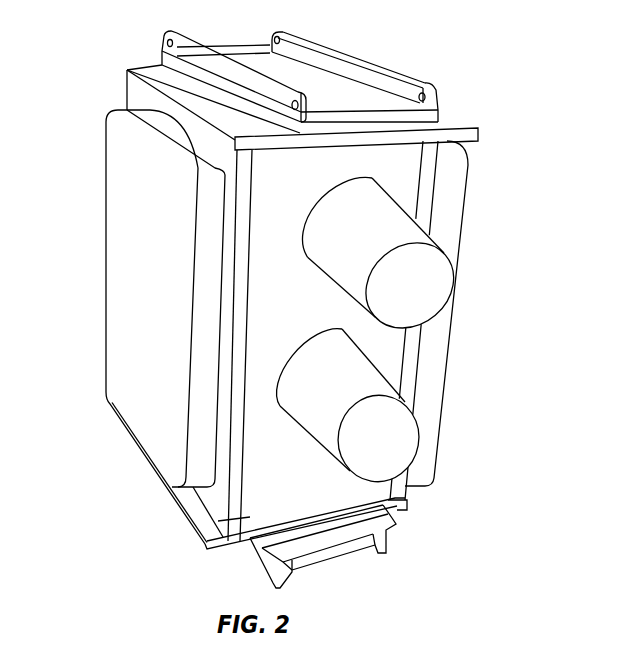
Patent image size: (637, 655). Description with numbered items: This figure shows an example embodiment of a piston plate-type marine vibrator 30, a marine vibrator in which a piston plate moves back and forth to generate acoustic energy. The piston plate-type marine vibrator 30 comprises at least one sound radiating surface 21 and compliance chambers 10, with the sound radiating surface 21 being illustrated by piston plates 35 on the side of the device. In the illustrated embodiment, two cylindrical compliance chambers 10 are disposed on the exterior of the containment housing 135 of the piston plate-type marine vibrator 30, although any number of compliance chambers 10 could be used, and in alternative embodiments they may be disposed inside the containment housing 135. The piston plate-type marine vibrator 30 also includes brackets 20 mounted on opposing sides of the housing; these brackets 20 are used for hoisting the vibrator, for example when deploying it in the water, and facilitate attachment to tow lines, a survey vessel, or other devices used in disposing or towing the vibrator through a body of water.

The compliance chamber 10 is at (383, 226).
The bracket 20 is at (308, 41).
The sound radiating surface 21 is at (121, 244).
The piston plate-type marine vibrator 30 is at (460, 66).
The piston plate 35 is at (123, 152).
The containment housing 135 is at (227, 530).